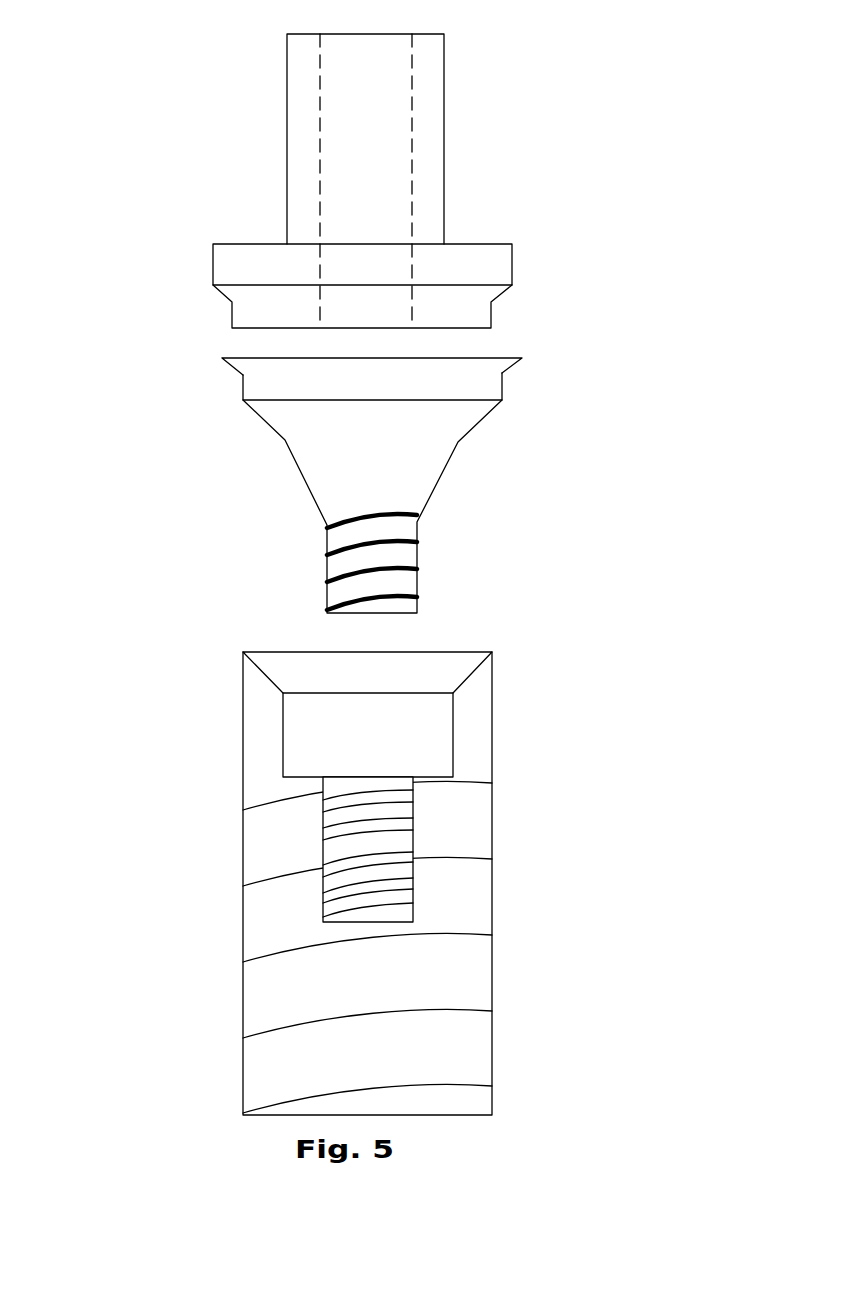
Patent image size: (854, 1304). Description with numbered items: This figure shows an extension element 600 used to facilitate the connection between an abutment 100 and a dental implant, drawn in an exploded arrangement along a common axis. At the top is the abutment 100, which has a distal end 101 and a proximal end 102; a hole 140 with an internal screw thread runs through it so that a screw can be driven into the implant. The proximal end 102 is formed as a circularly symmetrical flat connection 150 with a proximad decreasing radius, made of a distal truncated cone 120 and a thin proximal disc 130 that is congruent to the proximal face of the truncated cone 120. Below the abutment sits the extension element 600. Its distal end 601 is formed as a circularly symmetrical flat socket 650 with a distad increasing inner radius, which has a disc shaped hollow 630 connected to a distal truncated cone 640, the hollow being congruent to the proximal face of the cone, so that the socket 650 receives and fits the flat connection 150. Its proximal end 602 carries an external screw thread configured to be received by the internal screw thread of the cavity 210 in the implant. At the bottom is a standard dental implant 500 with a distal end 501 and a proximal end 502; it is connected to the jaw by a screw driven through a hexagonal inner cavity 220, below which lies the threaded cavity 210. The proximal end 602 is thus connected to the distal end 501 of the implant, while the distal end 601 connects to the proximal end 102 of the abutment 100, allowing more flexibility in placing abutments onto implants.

The abutment 100 is at (216, 76).
The distal end 101 is at (484, 46).
The proximal end 102 is at (364, 263).
The hole 140 is at (412, 165).
The flat connection 150 is at (163, 330).
The distal truncated cone 120 is at (512, 290).
The proximal disc 130 is at (491, 328).
The extension element 600 is at (216, 494).
The distal end 601 is at (364, 391).
The proximal end 602 is at (551, 546).
The socket 650 is at (152, 373).
The distal truncated cone 640 is at (237, 372).
The disc shaped hollow 630 is at (242, 387).
The standard dental implant 500 is at (216, 855).
The distal end 501 is at (545, 685).
The proximal end 502 is at (562, 970).
The hexagonal inner cavity 220 is at (280, 750).
The cavity 210 is at (375, 840).